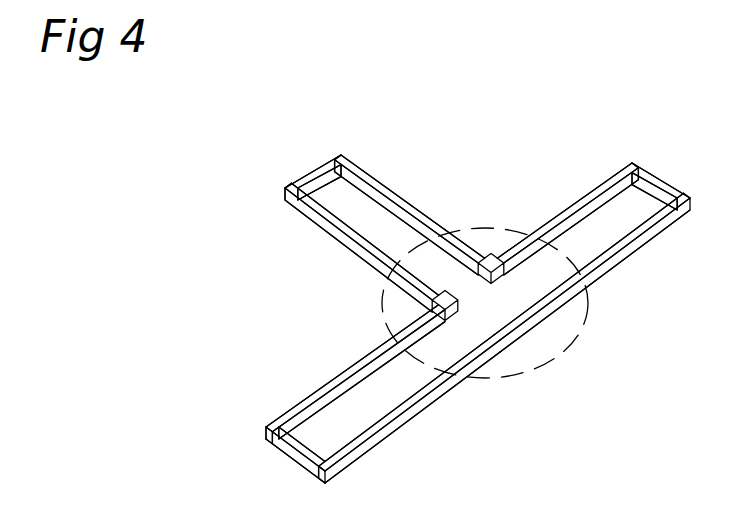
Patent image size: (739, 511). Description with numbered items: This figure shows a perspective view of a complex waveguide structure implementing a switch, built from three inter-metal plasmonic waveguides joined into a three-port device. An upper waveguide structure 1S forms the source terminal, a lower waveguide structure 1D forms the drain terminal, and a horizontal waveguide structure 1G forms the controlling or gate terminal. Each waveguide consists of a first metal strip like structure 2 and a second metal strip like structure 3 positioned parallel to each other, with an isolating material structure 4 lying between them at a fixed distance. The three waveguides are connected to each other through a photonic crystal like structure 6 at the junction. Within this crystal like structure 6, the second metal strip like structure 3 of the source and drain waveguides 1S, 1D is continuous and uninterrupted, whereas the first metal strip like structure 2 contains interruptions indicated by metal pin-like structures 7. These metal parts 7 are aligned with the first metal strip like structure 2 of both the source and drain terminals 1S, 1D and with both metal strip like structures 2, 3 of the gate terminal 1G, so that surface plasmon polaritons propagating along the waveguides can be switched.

The gate terminal waveguide structure 1G is at (300, 164).
The source terminal waveguide structure 1S is at (668, 171).
The drain terminal waveguide structure 1D is at (286, 463).
The first metal strip like structure 2 is at (417, 210).
The second metal strip like structure 3 is at (351, 236).
The isolating material structure 4 is at (371, 387).
The crystal-like part 6 is at (582, 324).
The metal pin-like structures 7 is at (496, 262).